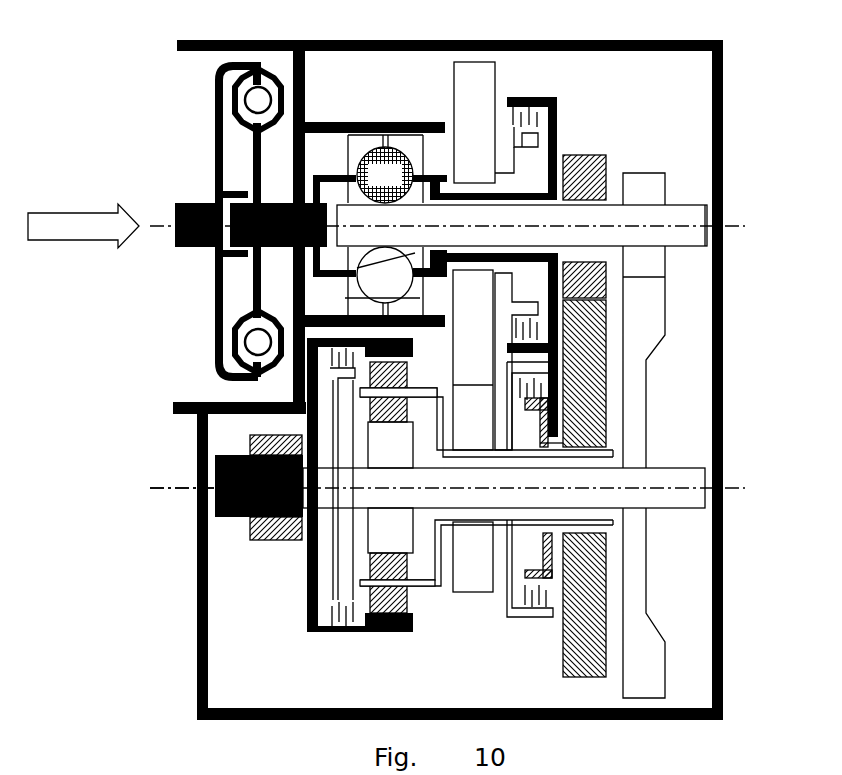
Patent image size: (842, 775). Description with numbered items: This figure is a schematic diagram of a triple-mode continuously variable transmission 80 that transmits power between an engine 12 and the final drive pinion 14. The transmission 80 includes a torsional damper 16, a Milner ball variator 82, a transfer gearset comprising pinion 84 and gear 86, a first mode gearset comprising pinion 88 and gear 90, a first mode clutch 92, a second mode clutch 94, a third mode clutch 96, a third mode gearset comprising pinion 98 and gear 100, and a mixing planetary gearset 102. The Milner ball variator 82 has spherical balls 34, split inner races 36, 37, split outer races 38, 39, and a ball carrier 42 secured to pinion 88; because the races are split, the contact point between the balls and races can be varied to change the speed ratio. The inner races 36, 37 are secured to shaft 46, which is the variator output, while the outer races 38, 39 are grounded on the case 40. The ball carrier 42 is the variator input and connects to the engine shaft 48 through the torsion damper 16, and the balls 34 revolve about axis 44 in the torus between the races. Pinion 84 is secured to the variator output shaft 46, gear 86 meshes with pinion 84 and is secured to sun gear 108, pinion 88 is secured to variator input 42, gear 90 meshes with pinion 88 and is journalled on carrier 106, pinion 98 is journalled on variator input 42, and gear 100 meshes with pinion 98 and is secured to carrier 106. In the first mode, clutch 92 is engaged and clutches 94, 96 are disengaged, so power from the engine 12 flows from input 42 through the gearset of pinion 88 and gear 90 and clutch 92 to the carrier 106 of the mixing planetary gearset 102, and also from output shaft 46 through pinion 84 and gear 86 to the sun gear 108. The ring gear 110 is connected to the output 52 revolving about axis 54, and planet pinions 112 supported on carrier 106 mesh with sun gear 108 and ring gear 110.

The engine 12 is at (91, 213).
The final drive pinion 14 is at (252, 532).
The torsional damper 16 is at (258, 135).
The spherical balls 34 is at (385, 175).
The split inner race 36 is at (350, 172).
The split inner race 37 is at (314, 266).
The split outer race 38 is at (360, 298).
The split outer race 39 is at (422, 313).
The case 40 is at (453, 122).
The ball carrier 42 is at (535, 190).
The axis 44 is at (735, 230).
The variator output shaft 46 is at (700, 221).
The engine shaft 48 is at (192, 250).
The output 52 is at (213, 505).
The axis 54 is at (186, 487).
The transmission 80 is at (183, 108).
The Milner ball variator 82 is at (366, 96).
The pinion 84 is at (666, 190).
The gear 86 is at (638, 596).
The pinion 88 is at (592, 154).
The gear 90 is at (593, 672).
The first mode clutch 92 is at (530, 608).
The second mode clutch 94 is at (340, 617).
The third mode clutch 96 is at (515, 97).
The pinion 98 is at (478, 62).
The gear 100 is at (475, 575).
The mixing planetary gearset 102 is at (297, 613).
The carrier 106 is at (438, 420).
The sun gear 108 is at (380, 460).
The ring gear 110 is at (410, 626).
The planet pinions 112 is at (362, 570).